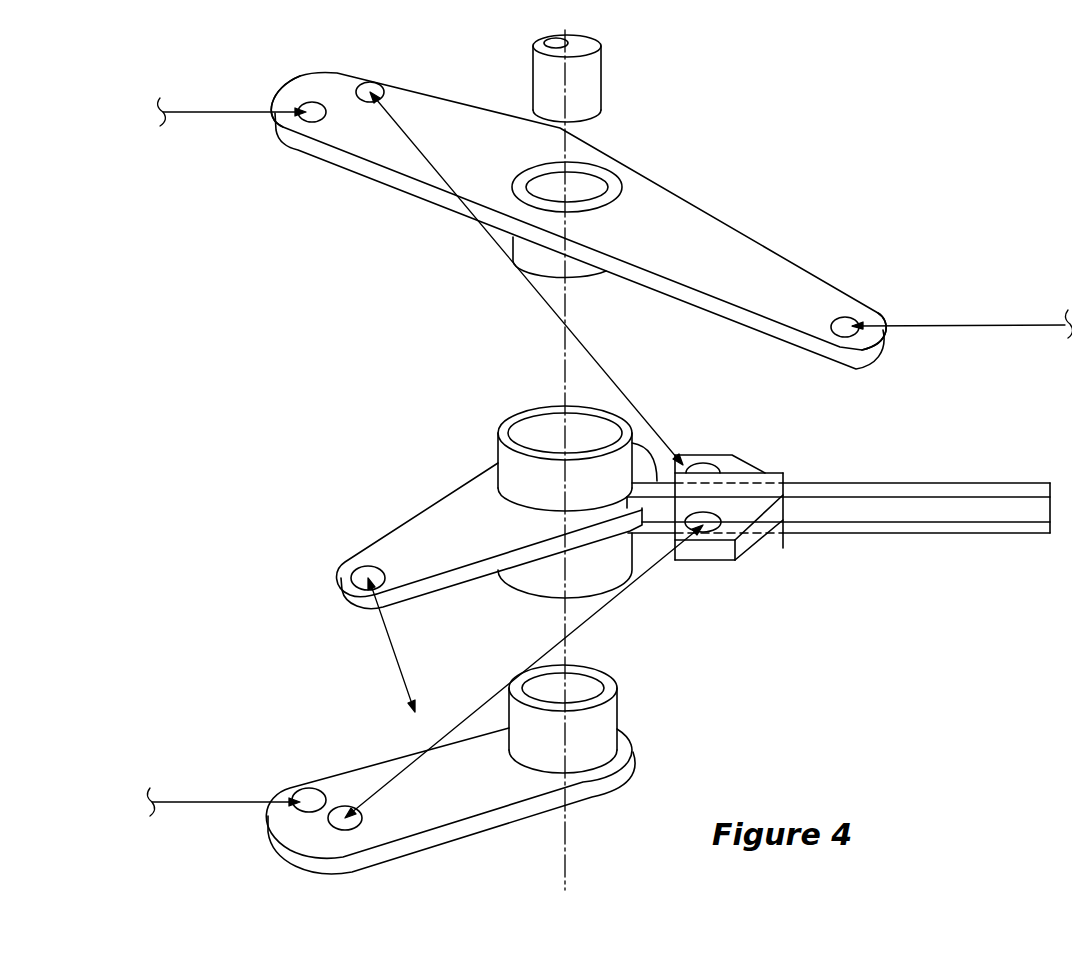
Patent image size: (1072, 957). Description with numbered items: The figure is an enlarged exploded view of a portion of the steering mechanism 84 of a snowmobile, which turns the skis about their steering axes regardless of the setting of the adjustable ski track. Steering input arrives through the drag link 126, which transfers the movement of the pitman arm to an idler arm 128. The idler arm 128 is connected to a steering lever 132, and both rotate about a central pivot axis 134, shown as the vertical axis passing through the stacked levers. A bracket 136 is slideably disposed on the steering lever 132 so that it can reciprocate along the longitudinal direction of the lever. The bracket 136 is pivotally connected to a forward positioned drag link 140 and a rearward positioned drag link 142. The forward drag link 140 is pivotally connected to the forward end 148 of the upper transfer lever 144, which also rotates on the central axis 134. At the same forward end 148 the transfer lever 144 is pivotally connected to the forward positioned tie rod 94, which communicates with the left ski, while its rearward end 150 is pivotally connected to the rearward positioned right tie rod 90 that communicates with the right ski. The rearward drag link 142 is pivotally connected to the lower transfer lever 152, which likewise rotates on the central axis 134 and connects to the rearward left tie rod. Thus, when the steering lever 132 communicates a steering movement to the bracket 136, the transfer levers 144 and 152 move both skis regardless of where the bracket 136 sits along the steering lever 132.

The steering mechanism 84 is at (759, 124).
The forward positioned tie rod 94 is at (207, 115).
The right tie rod 90 is at (1002, 325).
The transfer lever 144 is at (638, 217).
The forward end 148 is at (368, 182).
The rearward end 150 is at (752, 237).
The central pivot axis 134 is at (562, 342).
The forward positioned drag link 140 is at (602, 357).
The bracket 136 is at (728, 561).
The steering lever 132 is at (907, 527).
The idler arm 128 is at (430, 505).
The drag link 126 is at (393, 658).
The rearward positioned drag link 142 is at (598, 613).
The transfer lever 152 is at (438, 838).